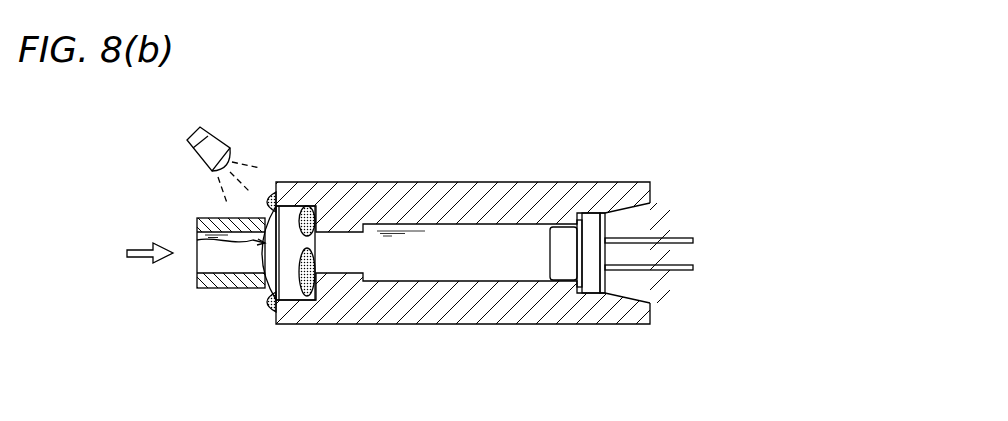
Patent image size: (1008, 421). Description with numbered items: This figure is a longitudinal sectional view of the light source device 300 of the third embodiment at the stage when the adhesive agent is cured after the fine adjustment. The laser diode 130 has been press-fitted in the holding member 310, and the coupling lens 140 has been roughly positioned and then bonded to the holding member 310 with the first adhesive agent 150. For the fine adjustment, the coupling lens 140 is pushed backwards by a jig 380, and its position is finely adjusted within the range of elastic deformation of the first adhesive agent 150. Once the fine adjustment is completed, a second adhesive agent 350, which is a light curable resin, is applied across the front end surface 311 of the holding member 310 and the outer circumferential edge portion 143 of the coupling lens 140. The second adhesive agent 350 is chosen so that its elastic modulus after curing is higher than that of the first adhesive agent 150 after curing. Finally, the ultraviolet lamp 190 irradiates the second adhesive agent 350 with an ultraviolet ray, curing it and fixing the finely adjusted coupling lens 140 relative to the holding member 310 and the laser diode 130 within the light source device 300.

The light source device 300 is at (455, 239).
The holding member 310 is at (533, 181).
The front end surface 311 is at (275, 322).
The outer circumferential edge portion 143 is at (285, 285).
The first adhesive agent 150 is at (316, 270).
The second adhesive agent 350 is at (270, 195).
The laser diode 130 is at (607, 225).
The jig 380 is at (197, 285).
The coupling lens 140 is at (197, 240).
The ultraviolet lamp 190 is at (215, 147).